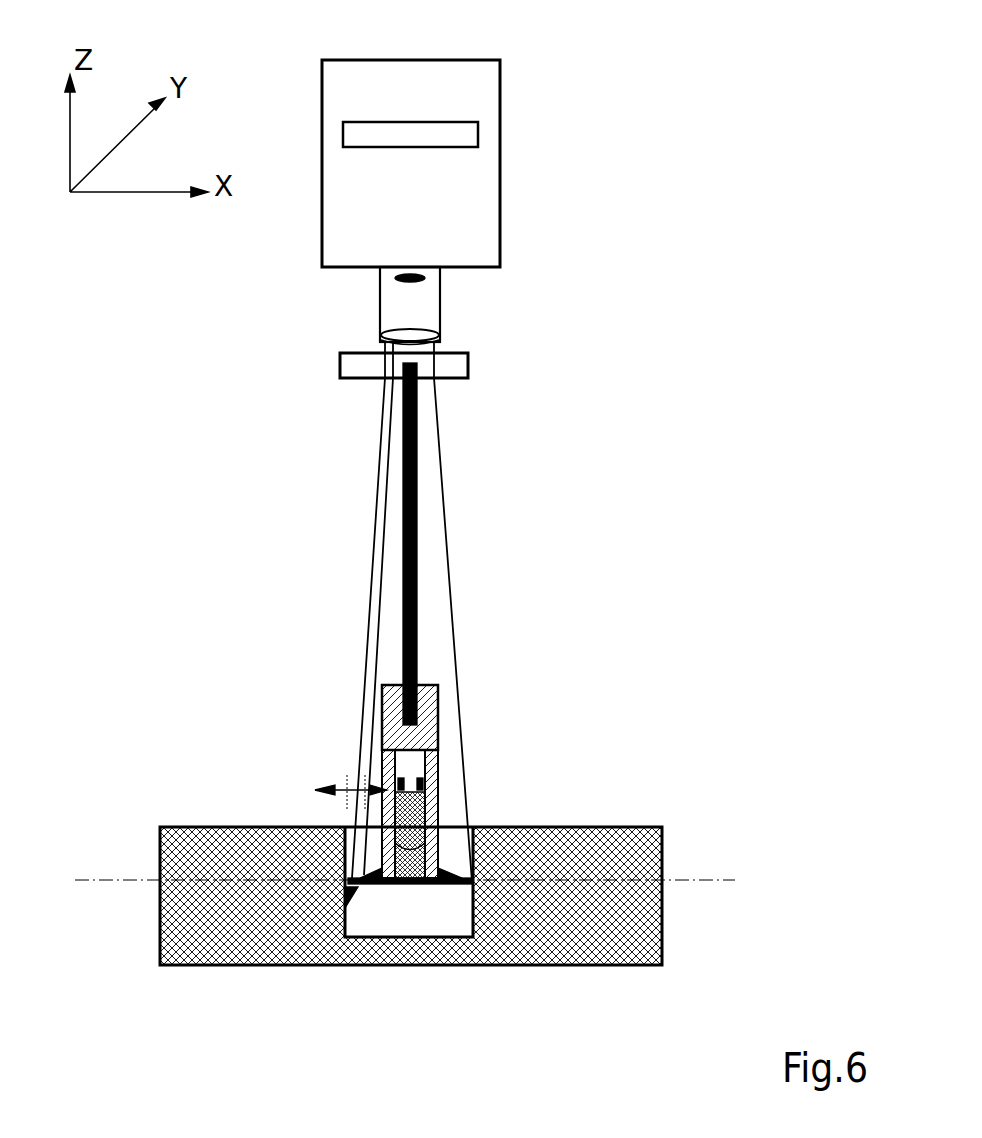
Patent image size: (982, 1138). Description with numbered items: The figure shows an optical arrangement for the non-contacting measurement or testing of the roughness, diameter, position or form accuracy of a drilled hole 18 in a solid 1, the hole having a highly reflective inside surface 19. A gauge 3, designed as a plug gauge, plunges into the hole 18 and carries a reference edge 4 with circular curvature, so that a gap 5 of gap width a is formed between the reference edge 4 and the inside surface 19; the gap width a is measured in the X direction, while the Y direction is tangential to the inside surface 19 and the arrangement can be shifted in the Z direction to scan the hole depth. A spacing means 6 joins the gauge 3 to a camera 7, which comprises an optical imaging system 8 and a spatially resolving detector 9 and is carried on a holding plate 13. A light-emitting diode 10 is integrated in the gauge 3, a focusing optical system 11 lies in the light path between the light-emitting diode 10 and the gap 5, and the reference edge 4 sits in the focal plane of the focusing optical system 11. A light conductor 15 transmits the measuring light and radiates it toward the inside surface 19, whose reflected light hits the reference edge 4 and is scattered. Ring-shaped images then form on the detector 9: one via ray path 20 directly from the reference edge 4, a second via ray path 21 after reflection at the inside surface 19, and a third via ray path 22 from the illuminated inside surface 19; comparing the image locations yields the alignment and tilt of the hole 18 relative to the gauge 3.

The solid 1 is at (192, 825).
The gauge 3 is at (383, 763).
The reference edge 4 is at (443, 855).
The gap 5 is at (345, 930).
The spacing means 6 is at (417, 437).
The camera 7 is at (500, 237).
The optical imaging system 8 is at (425, 278).
The spatially resolving detector 9 is at (468, 137).
The light-emitting diode 10 is at (437, 785).
The focusing optical system 11 is at (432, 830).
The holding plate 13 is at (468, 370).
The light conductor 15 is at (427, 884).
The drilled hole 18 is at (393, 923).
The inside surface 19 is at (463, 913).
The ray path 20 is at (388, 468).
The ray path 21 is at (370, 547).
The ray path 22 is at (450, 547).
The gap width a is at (336, 786).